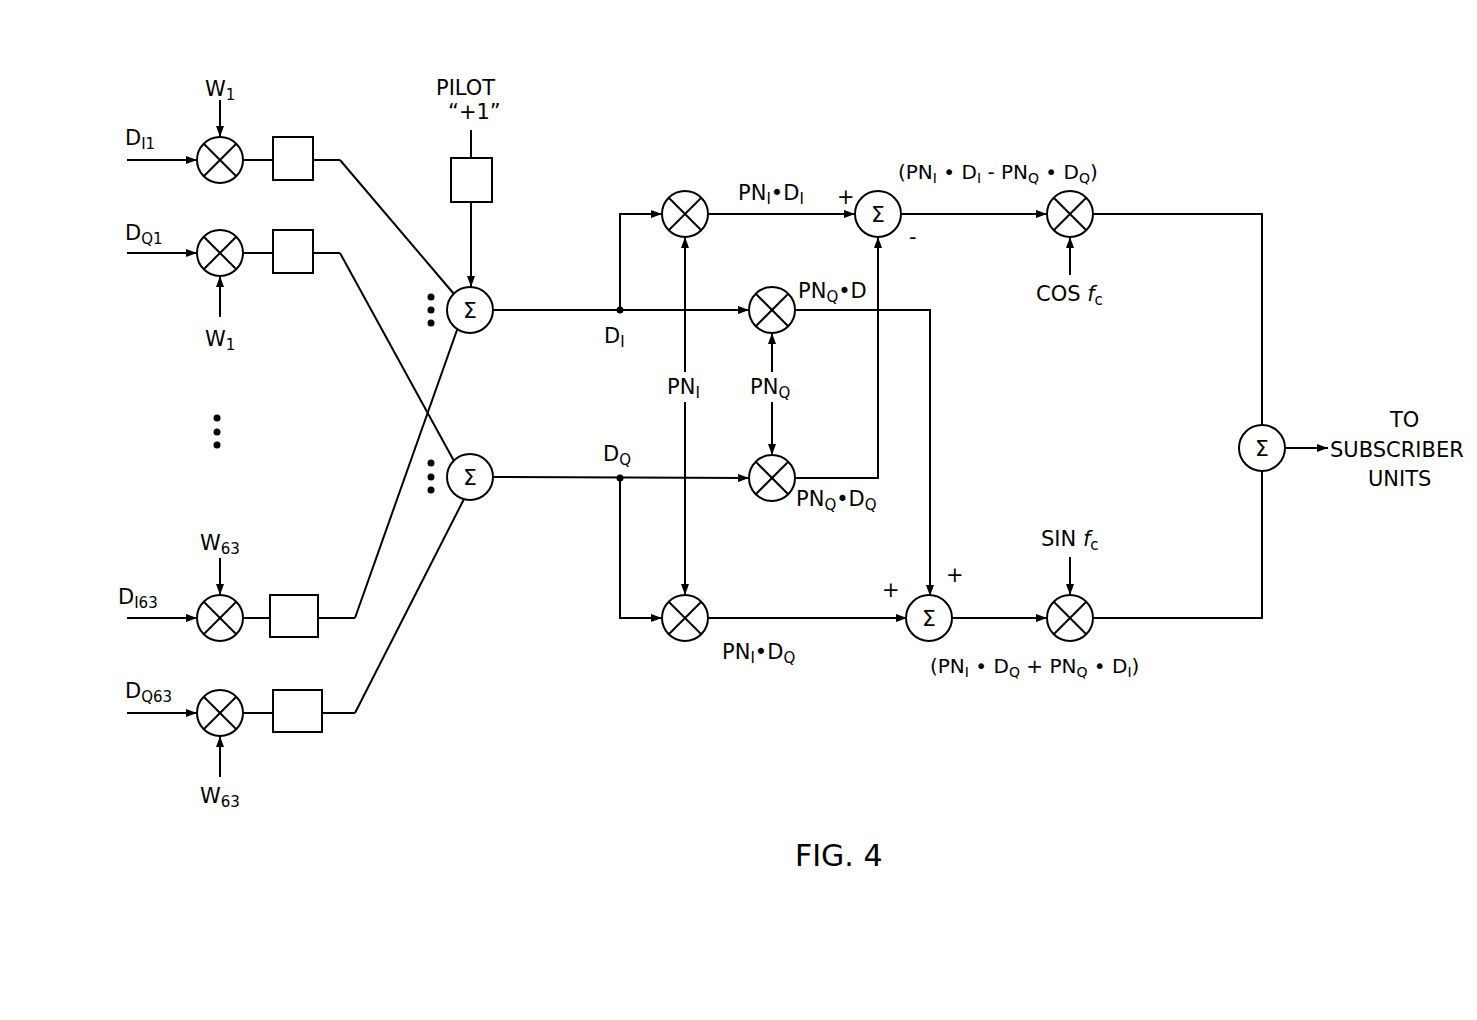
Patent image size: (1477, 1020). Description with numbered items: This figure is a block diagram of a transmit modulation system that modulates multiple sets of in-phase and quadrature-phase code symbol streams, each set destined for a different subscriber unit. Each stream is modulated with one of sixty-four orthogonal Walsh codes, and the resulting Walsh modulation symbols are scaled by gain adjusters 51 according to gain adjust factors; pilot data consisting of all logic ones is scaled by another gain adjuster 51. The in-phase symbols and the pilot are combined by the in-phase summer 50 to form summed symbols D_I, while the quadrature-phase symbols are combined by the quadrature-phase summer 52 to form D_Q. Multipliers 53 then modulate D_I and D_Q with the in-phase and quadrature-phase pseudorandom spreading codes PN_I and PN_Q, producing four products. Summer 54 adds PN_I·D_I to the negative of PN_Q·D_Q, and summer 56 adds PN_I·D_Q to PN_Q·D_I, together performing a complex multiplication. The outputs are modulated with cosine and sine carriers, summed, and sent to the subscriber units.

The in-phase summer 50 is at (486, 292).
The gain adjuster 51 is at (293, 137).
The quadrature-phase summer 52 is at (486, 459).
The multiplier 53 is at (688, 191).
The summer 54 is at (879, 191).
The summer 56 is at (912, 633).